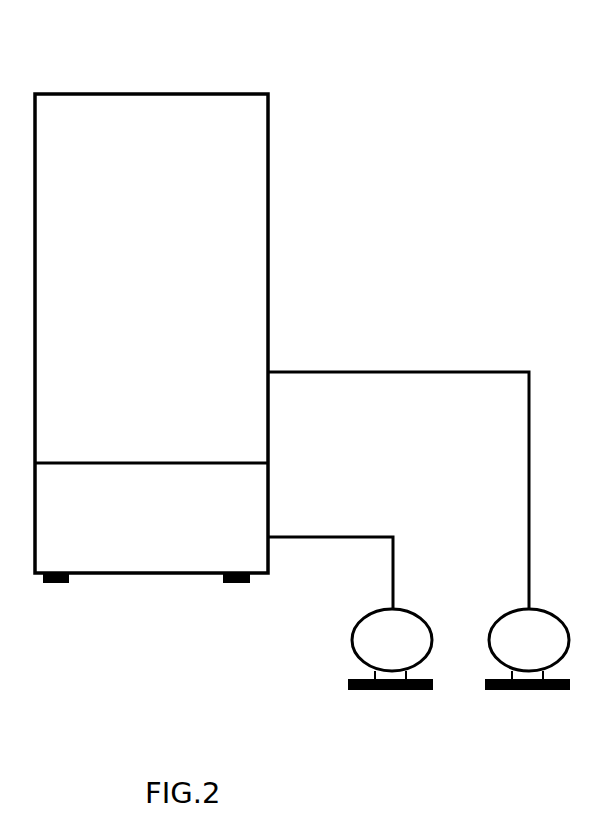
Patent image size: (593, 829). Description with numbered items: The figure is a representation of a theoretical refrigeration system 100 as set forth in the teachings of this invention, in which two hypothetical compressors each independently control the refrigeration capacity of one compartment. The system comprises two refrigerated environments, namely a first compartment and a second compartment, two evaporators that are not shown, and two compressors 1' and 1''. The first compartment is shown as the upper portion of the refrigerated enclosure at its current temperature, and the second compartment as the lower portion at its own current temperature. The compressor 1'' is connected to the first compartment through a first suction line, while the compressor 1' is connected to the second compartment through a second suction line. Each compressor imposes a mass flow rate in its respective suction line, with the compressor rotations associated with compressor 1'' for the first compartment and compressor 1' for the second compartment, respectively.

The heating system / heat pump arrangement 100 is at (292, 63).
The compressor 1' is at (390, 649).
The compressor 1'' is at (527, 649).